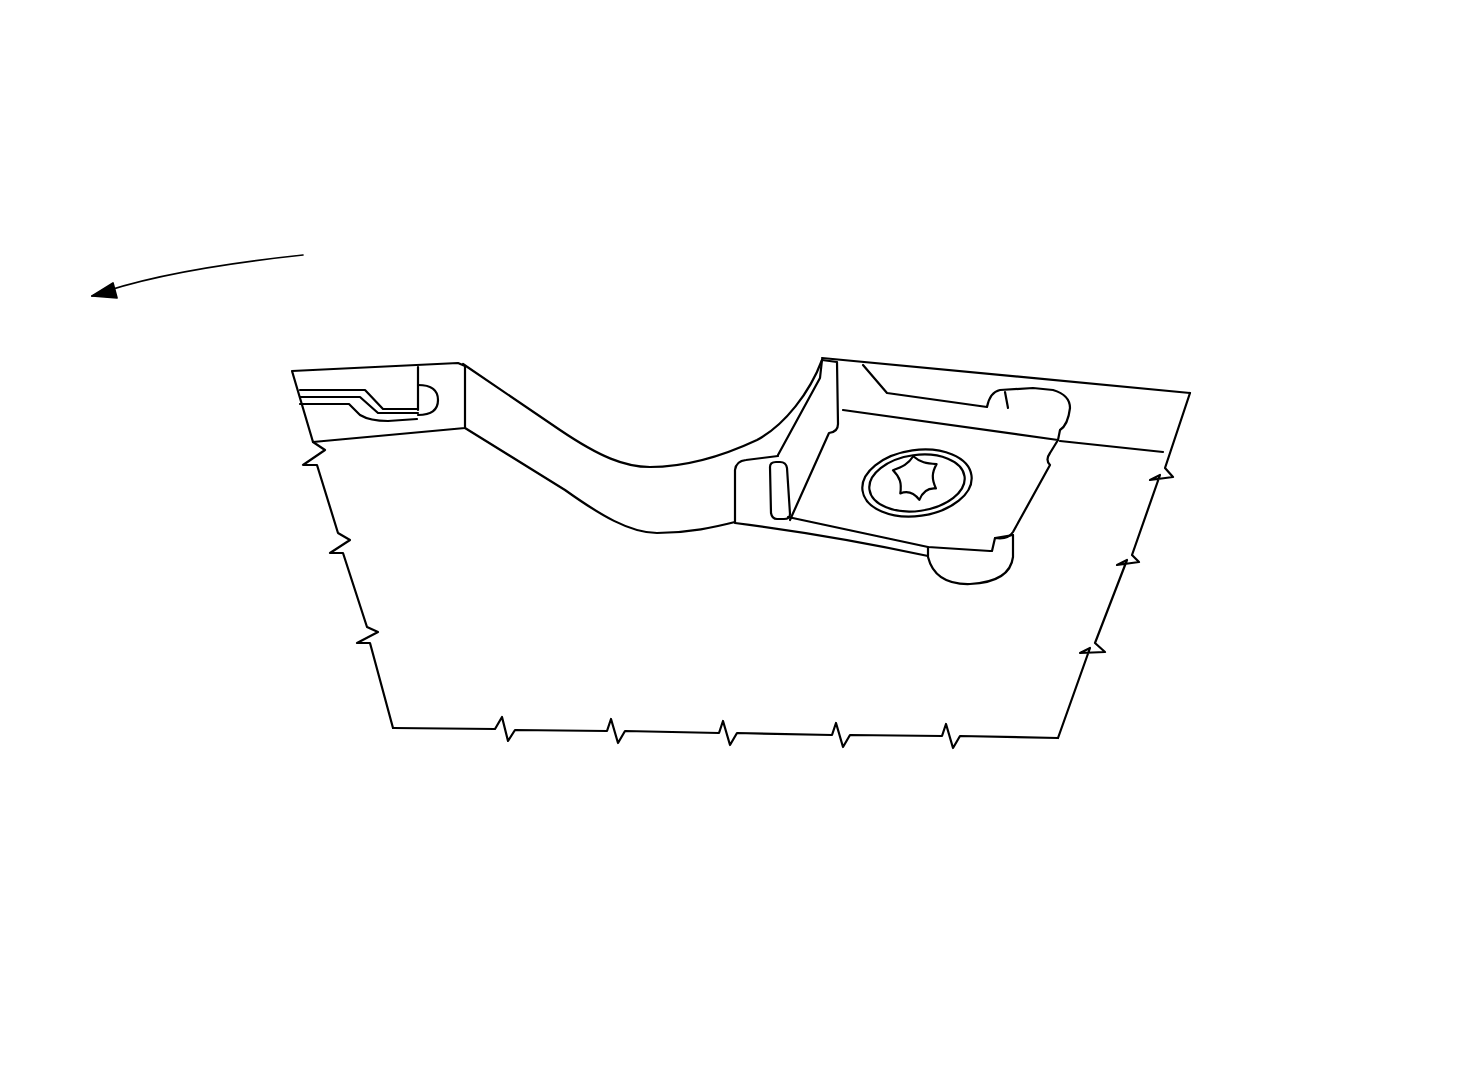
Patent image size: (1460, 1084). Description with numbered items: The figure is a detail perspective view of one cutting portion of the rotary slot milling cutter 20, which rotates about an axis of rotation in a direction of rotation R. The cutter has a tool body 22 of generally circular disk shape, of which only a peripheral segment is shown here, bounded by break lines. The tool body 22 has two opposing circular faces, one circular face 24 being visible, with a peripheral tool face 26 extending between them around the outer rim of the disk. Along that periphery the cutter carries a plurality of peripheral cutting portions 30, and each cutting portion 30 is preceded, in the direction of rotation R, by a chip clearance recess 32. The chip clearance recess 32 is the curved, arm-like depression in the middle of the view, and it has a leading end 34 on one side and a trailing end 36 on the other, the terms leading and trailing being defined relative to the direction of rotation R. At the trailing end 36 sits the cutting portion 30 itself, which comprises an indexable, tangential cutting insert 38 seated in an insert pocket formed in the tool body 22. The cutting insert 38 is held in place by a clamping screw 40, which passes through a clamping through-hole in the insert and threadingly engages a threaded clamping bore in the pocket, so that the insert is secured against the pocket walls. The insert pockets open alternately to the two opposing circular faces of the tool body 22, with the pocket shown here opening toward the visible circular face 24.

The rotary slot milling cutter 20 is at (1327, 247).
The tool body 22 is at (688, 645).
The circular face 24 is at (557, 675).
The peripheral tool face 26 is at (1145, 407).
The peripheral cutting portion 30 is at (415, 518).
The chip clearance recess 32 is at (687, 387).
The leading end 34 is at (514, 428).
The trailing end 36 is at (757, 445).
The cutting insert 38 is at (1002, 463).
The clamping screw 40 is at (917, 483).